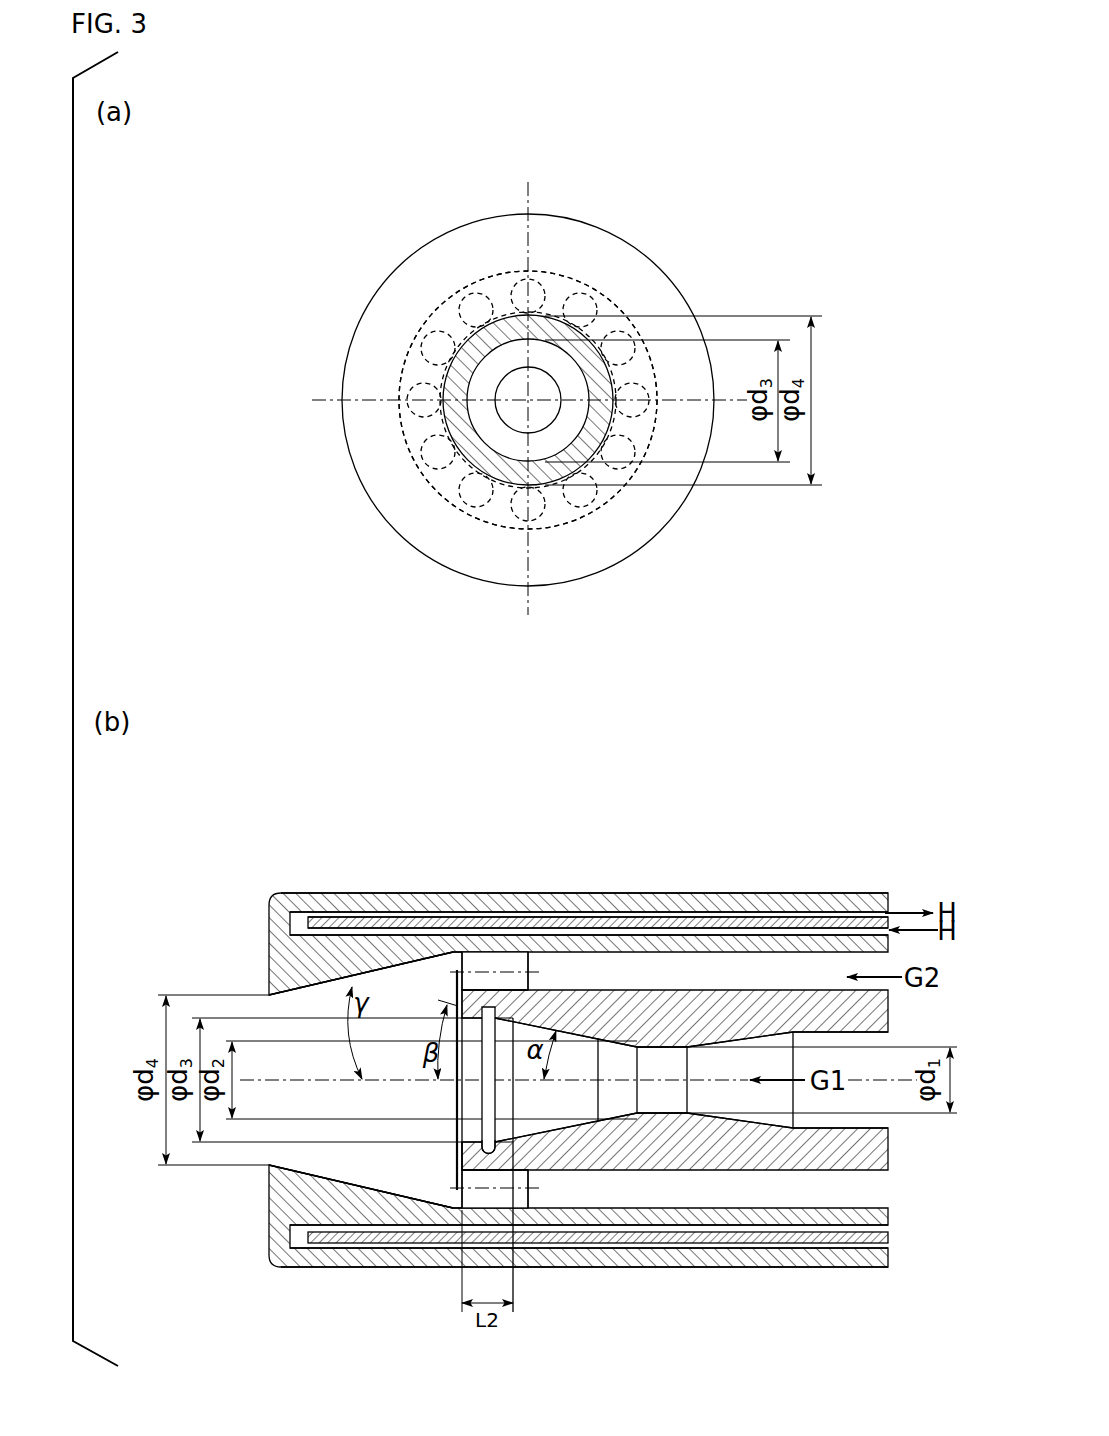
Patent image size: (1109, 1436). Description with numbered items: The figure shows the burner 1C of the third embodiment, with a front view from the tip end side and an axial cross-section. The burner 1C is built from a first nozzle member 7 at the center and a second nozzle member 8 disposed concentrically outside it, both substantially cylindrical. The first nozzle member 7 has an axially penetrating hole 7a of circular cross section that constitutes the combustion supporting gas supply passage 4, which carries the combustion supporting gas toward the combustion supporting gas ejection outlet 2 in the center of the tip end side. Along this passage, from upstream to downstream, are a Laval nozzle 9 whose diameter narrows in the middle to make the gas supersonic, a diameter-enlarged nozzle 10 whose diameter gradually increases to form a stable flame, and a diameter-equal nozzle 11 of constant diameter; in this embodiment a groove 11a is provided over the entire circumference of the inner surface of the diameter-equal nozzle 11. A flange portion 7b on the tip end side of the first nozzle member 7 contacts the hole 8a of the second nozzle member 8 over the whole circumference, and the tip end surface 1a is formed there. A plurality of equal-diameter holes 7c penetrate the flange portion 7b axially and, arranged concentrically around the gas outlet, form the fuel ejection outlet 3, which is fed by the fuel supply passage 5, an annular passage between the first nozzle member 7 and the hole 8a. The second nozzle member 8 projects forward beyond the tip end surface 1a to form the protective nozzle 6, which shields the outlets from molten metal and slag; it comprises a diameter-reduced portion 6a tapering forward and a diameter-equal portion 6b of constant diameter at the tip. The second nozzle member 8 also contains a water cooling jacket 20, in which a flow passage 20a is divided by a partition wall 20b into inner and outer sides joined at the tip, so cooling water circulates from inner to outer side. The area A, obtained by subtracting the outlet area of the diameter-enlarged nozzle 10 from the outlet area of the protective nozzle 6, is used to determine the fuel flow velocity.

The burner 1C is at (580, 175).
The tip end surface 1a is at (460, 1160).
The combustion supporting gas ejection outlet 2 is at (587, 375).
The fuel ejection outlet 3 is at (576, 283).
The combustion supporting gas supply passage 4 is at (882, 1110).
The fuel supply passage 5 is at (667, 986).
The protective nozzle 6 is at (541, 489).
The diameter-reduced portion 6a is at (386, 978).
The diameter-equal portion 6b is at (463, 393).
The first nozzle member 7 is at (397, 440).
The hole 7a is at (512, 438).
The flange portion 7b is at (420, 483).
The holes 7c is at (502, 958).
The second nozzle member 8 is at (402, 255).
The hole 8a is at (497, 283).
The Laval nozzle 9 is at (661, 1122).
The diameter-enlarged nozzle 10 is at (564, 1130).
The diameter-equal nozzle 11 is at (504, 1148).
The groove 11a is at (476, 1153).
The water cooling jacket 20 is at (795, 822).
The flow passage 20a is at (795, 914).
The partition wall 20b is at (826, 917).
The area A is at (455, 362).